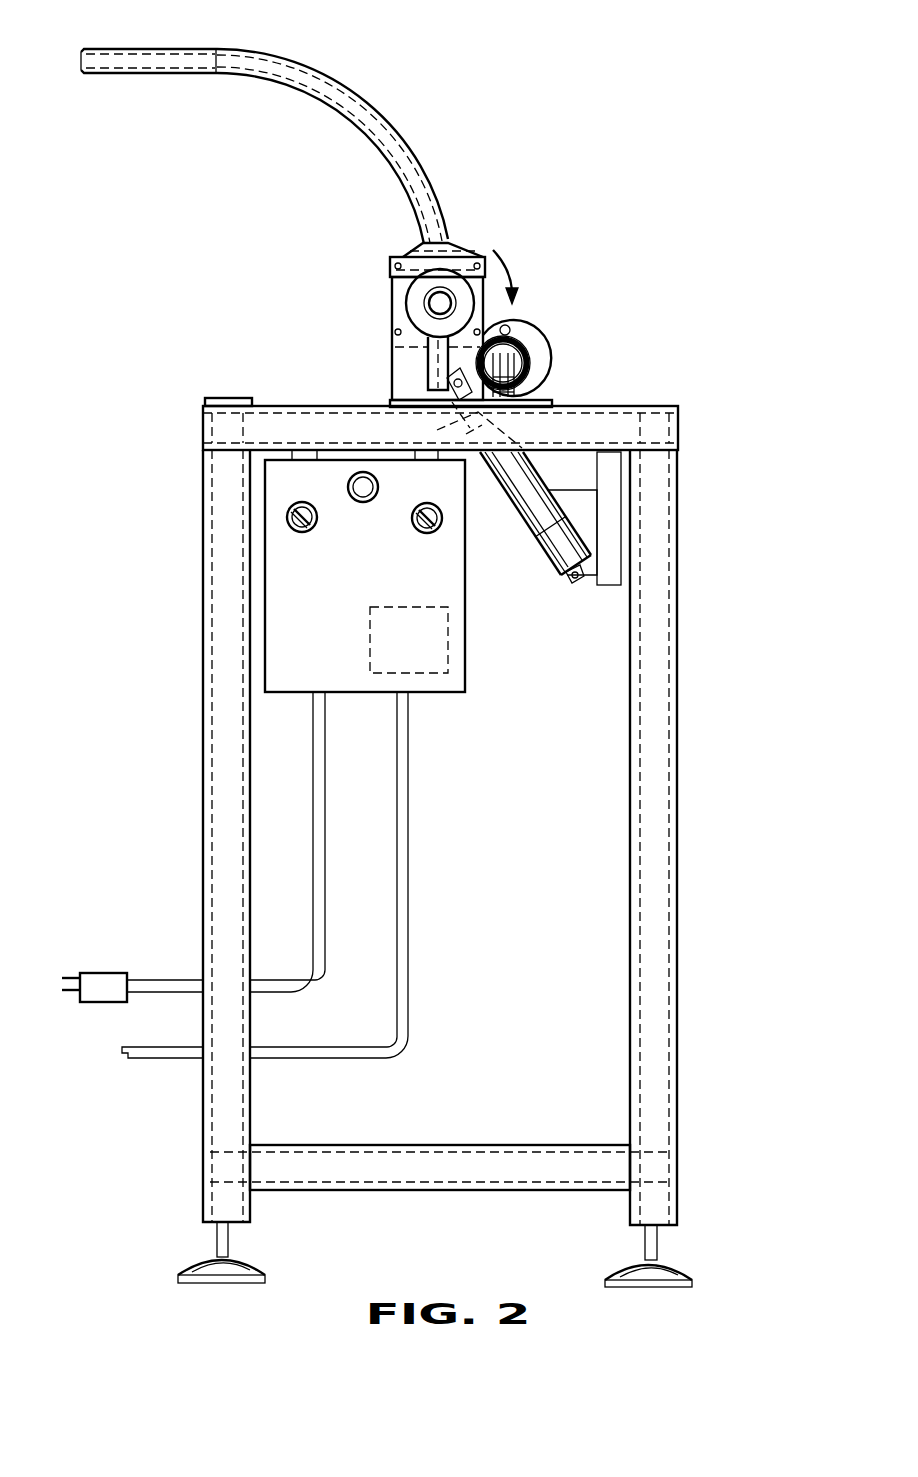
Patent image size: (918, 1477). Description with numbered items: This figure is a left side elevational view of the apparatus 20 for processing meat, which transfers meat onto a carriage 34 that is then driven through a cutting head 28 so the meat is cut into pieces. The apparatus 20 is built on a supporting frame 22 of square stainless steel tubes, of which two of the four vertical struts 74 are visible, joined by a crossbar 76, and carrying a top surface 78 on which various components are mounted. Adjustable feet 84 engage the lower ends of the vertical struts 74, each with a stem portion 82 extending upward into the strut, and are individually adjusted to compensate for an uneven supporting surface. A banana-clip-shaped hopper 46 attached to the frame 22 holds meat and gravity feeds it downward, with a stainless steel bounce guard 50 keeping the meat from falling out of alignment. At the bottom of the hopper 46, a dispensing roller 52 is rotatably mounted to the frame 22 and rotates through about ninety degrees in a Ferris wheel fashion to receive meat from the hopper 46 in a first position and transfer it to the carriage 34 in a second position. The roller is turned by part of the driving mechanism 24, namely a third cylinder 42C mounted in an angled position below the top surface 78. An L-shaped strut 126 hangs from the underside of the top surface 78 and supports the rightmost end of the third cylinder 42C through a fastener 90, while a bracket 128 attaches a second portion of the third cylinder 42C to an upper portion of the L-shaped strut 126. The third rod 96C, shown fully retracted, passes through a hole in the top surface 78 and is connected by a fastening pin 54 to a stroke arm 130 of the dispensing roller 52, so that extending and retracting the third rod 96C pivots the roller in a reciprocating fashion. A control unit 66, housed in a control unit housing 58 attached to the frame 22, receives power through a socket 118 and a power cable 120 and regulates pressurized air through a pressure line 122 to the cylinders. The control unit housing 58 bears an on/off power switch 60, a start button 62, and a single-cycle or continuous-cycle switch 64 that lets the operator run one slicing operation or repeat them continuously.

The apparatus for processing meat 20 is at (478, 135).
The supporting frame 22 is at (445, 793).
The driving mechanism 24 is at (536, 540).
The cutting head 28 is at (545, 331).
The carriage 34 is at (530, 372).
The third cylinder 42C is at (526, 500).
The hopper 46 is at (292, 69).
The bounce guard 50 is at (446, 207).
The dispensing roller 52 is at (390, 298).
The fastening pin 54 is at (447, 378).
The control unit housing 58 is at (319, 571).
The on/off power switch 60 is at (305, 532).
The start button 62 is at (363, 502).
The single-cycle or continuous-cycle switch 64 is at (424, 533).
The control unit 66 is at (425, 632).
The vertical struts 74 is at (205, 857).
The crossbars 76 is at (307, 427).
The top surface 78 is at (272, 405).
The stem portion 82 is at (218, 1238).
The adjustable feet 84 is at (235, 1270).
The fastener 90 is at (575, 582).
The third rod 96C is at (432, 434).
The socket 118 is at (95, 982).
The power cable 120 is at (325, 780).
The pressure line 122 is at (130, 1052).
The L-shaped strut 126 is at (607, 585).
The bracket 128 is at (565, 492).
The stroke arm 130 is at (455, 360).